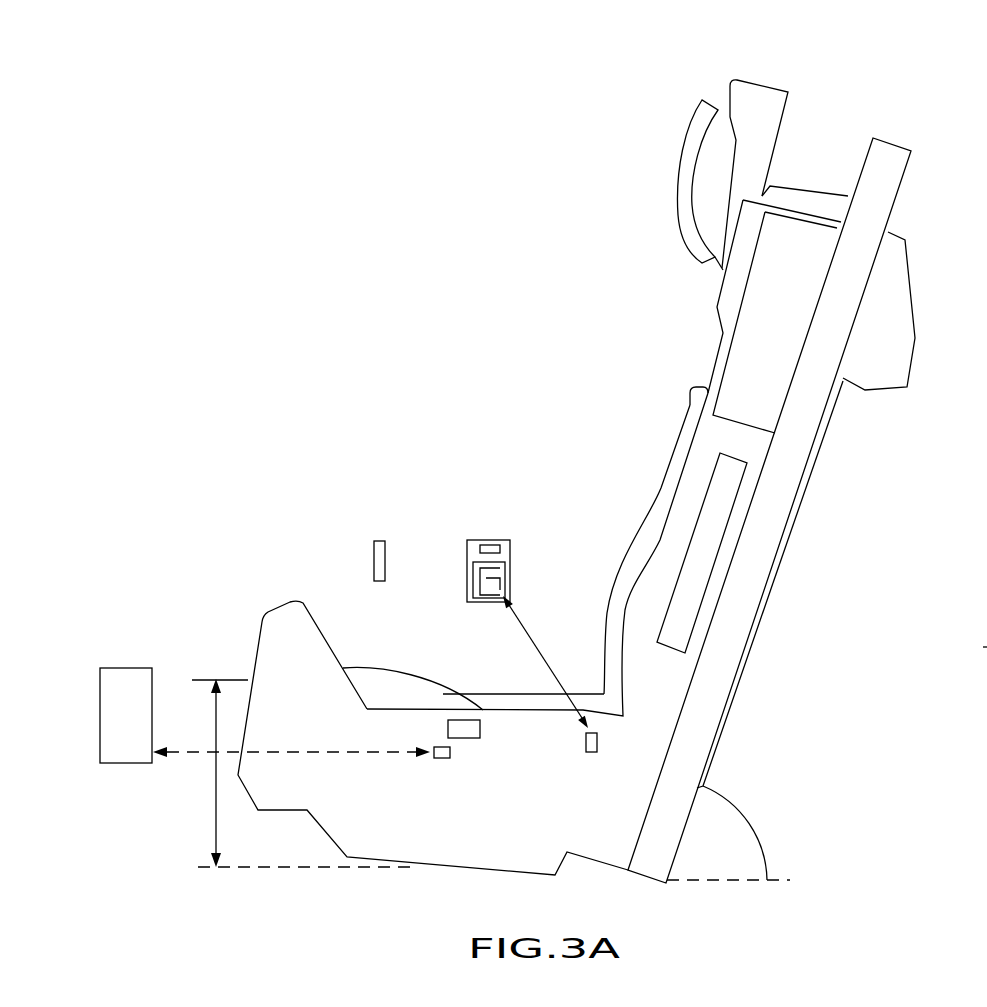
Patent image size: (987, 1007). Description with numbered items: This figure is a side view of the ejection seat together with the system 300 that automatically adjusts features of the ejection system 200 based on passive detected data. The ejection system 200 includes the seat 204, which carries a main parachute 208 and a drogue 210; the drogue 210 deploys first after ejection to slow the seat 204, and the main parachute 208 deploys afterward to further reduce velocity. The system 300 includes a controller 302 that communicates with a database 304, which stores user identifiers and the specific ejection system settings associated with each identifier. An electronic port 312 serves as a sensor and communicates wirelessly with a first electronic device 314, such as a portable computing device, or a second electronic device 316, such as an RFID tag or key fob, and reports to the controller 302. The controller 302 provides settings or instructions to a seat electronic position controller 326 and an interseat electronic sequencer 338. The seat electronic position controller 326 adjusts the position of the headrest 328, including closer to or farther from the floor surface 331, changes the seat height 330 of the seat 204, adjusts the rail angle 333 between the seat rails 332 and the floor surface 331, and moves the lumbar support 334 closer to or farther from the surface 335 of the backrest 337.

The ejection system 200 is at (325, 581).
The seat 204 is at (650, 492).
The main parachute 208 is at (780, 422).
The drogue 210 is at (902, 363).
The system 300 is at (312, 476).
The controller 302 is at (443, 758).
The database 304 is at (125, 763).
The electronic port 312 is at (590, 752).
The first electronic device 314 is at (468, 550).
The second electronic device 316 is at (373, 558).
The seat electronic position controller 326 is at (457, 723).
The headrest 328 is at (728, 168).
The seat height 330 is at (217, 832).
The floor surface 331 is at (335, 868).
The seat rails 332 is at (747, 650).
The rail angle 333 is at (760, 837).
The lumbar support 334 is at (635, 553).
The surface 335 is at (780, 578).
The backrest 337 is at (825, 447).
The interseat electronic sequencer 338 is at (967, 648).